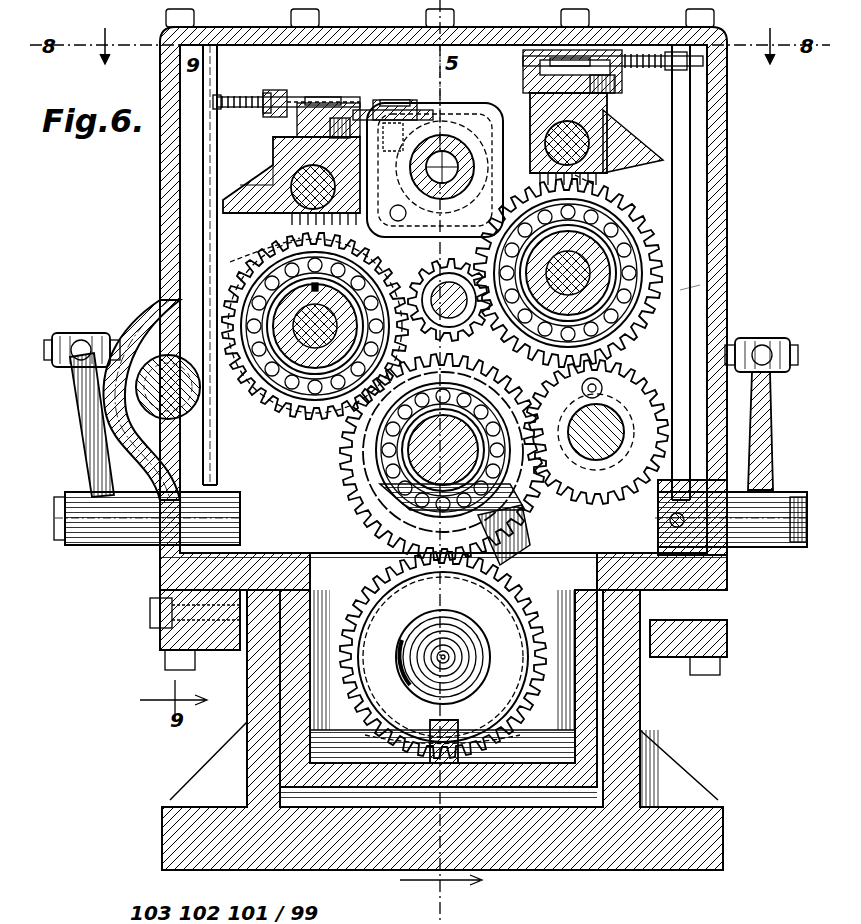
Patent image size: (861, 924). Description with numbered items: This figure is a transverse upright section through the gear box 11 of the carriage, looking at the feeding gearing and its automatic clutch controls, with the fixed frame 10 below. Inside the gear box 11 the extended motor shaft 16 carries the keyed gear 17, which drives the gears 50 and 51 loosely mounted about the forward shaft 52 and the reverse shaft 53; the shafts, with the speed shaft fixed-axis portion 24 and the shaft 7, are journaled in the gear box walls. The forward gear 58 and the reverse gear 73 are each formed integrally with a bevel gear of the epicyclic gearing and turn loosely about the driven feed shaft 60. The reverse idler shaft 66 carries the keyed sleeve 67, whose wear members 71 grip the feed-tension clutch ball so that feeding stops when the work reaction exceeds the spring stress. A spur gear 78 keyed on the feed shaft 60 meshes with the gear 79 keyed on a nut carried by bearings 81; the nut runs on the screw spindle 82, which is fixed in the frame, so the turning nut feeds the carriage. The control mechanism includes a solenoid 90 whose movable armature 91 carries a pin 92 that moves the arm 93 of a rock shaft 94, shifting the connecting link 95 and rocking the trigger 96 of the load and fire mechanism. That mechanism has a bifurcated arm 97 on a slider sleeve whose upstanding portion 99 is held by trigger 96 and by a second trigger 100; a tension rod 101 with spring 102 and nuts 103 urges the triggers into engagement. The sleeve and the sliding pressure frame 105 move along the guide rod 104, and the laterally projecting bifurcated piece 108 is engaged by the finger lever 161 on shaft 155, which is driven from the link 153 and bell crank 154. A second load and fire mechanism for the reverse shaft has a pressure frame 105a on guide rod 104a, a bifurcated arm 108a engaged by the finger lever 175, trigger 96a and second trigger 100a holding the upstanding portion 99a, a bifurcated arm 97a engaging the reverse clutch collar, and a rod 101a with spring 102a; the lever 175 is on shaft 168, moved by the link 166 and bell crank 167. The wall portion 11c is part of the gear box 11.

The shaft 7 is at (335, 330).
The fixed frame 10 is at (590, 840).
The gear box 11 is at (712, 198).
The casing top wall 11c is at (502, 45).
The extended motor shaft 16 is at (470, 372).
The gear 17 is at (444, 272).
The speed shaft fixed-axis portion 24 is at (160, 370).
The gear 50 is at (382, 280).
The gear 51 is at (628, 215).
The forward shaft 52 is at (310, 340).
The reverse shaft 53 is at (600, 305).
The forward gear 58 is at (350, 458).
The driven feed shaft 60 is at (376, 485).
The reverse idler shaft 66 is at (612, 460).
The sleeve 67 is at (592, 460).
The wear members 71 is at (602, 386).
The reverse gear 73 is at (505, 532).
The spur gear 78 is at (395, 515).
The gear 79 is at (380, 582).
The bearings 81 is at (510, 700).
The screw spindle 82 is at (420, 680).
The solenoid 90 is at (455, 128).
The movable armature 91 is at (468, 158).
The pin 92 is at (480, 182).
The arm 93 is at (414, 215).
The rock shaft 94 is at (392, 105).
The connecting link 95 is at (370, 110).
The trigger 96 is at (340, 118).
The bifurcated arm 97 is at (285, 245).
The upstanding portion 99 is at (323, 100).
The second trigger 100 is at (268, 117).
The tension rod 101 is at (297, 97).
The spring 102 is at (262, 97).
The nuts 103 is at (232, 95).
The guide rod 104 is at (300, 215).
The sliding pressure frame 105 is at (282, 150).
The bifurcated piece 108 is at (248, 200).
The upstanding portion 99a is at (572, 68).
The second trigger 100a is at (536, 84).
The rod 101a is at (553, 57).
The spring 102a is at (655, 66).
The guide rod 104a is at (585, 140).
The pressure frame 105a is at (607, 106).
The bifurcated arm 108a is at (645, 152).
The trigger 96a is at (620, 82).
The bifurcated arm 97a is at (598, 178).
The link 153 is at (72, 338).
The bell crank 154 is at (92, 432).
The shaft 155 is at (82, 548).
The finger lever 161 is at (217, 455).
The link 166 is at (770, 338).
The bell crank 167 is at (772, 430).
The shaft 168 is at (768, 548).
The finger lever 175 is at (680, 285).